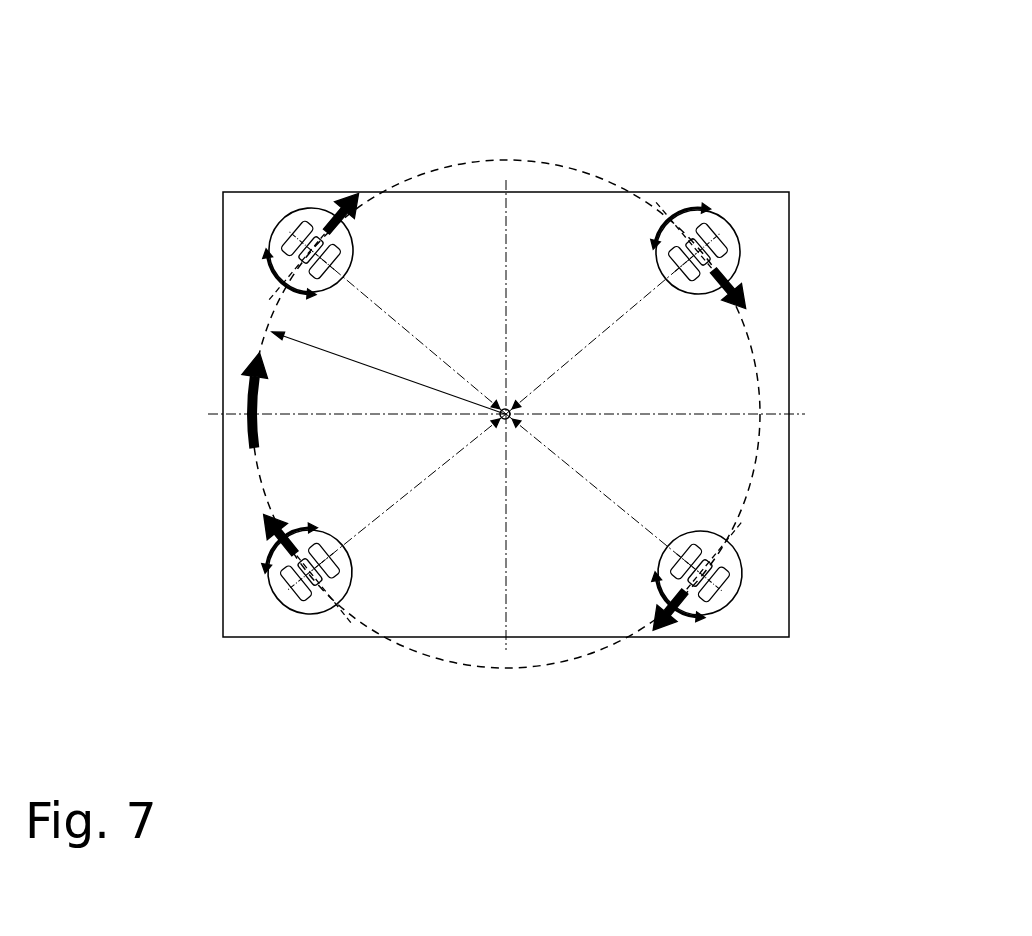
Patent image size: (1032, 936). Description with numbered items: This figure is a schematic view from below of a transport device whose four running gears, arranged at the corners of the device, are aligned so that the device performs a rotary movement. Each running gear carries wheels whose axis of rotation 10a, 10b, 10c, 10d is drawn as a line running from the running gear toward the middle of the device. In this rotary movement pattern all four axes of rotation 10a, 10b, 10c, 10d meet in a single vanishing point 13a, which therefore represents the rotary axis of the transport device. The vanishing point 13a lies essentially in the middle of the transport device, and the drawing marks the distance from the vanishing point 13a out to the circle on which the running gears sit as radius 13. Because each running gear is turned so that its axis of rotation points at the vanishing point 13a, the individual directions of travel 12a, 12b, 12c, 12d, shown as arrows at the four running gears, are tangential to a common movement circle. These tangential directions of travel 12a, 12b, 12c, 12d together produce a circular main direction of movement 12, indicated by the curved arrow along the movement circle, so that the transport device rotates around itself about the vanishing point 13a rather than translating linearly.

The axis of rotation 10a is at (633, 300).
The axis of rotation 10b is at (412, 333).
The axis of rotation 10c is at (390, 510).
The axis of rotation 10d is at (595, 485).
The direction of travel 12a is at (733, 300).
The direction of travel 12b is at (345, 200).
The direction of travel 12c is at (266, 522).
The direction of travel 12d is at (667, 622).
The main direction of movement 12 is at (247, 372).
The radius from rotation center to propulsion units 13 is at (377, 367).
The vanishing point 13a is at (503, 405).